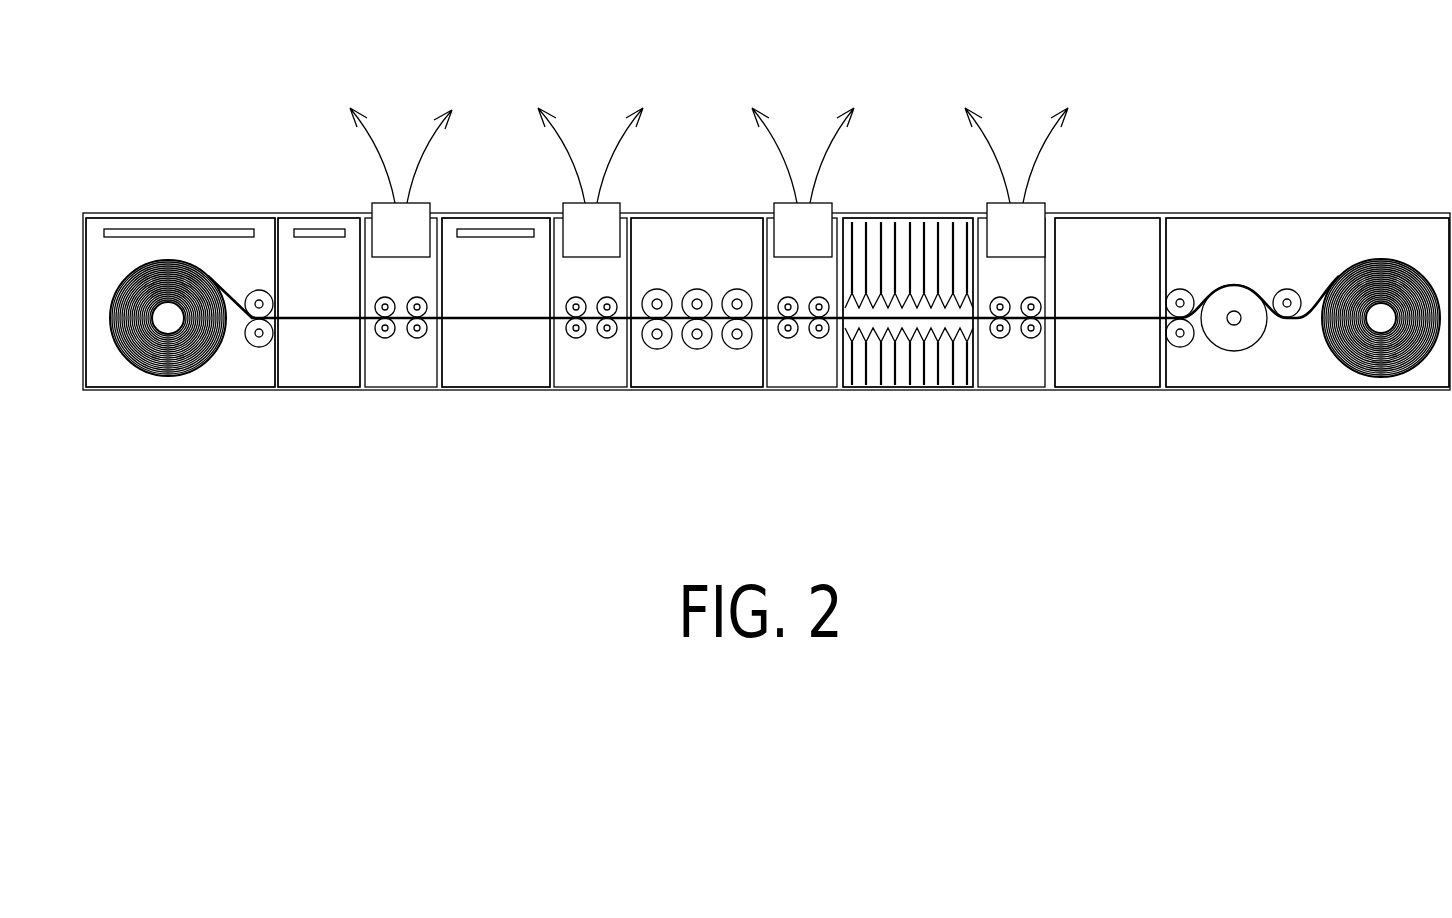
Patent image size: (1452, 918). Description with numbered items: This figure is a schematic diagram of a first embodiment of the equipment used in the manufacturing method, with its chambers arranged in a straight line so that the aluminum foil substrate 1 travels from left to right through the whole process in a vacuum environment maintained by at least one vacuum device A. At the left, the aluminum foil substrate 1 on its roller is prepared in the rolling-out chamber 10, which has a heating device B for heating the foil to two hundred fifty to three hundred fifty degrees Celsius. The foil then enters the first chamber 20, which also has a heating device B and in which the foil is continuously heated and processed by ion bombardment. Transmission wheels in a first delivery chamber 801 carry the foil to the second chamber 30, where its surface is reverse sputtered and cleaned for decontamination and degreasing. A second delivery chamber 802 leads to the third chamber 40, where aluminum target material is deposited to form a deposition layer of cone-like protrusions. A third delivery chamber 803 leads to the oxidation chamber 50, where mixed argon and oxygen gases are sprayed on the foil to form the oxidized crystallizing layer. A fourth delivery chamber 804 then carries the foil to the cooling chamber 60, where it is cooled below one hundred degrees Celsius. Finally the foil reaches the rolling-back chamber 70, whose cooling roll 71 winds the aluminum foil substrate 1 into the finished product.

The aluminum foil substrate 1 is at (198, 360).
The rolling-out chamber 10 is at (108, 377).
The first chamber 20 is at (327, 370).
The second chamber 30 is at (483, 360).
The third chamber 40 is at (693, 358).
The oxidation chamber 50 is at (932, 375).
The cooling chamber 60 is at (1103, 372).
The rolling-back chamber 70 is at (1269, 378).
The cooling roll 71 is at (1375, 323).
The first delivery chamber 801 is at (399, 358).
The second delivery chamber 802 is at (589, 352).
The third delivery chamber 803 is at (807, 363).
The fourth delivery chamber 804 is at (1017, 360).
The vacuum device A is at (420, 212).
The heating device B is at (169, 229).